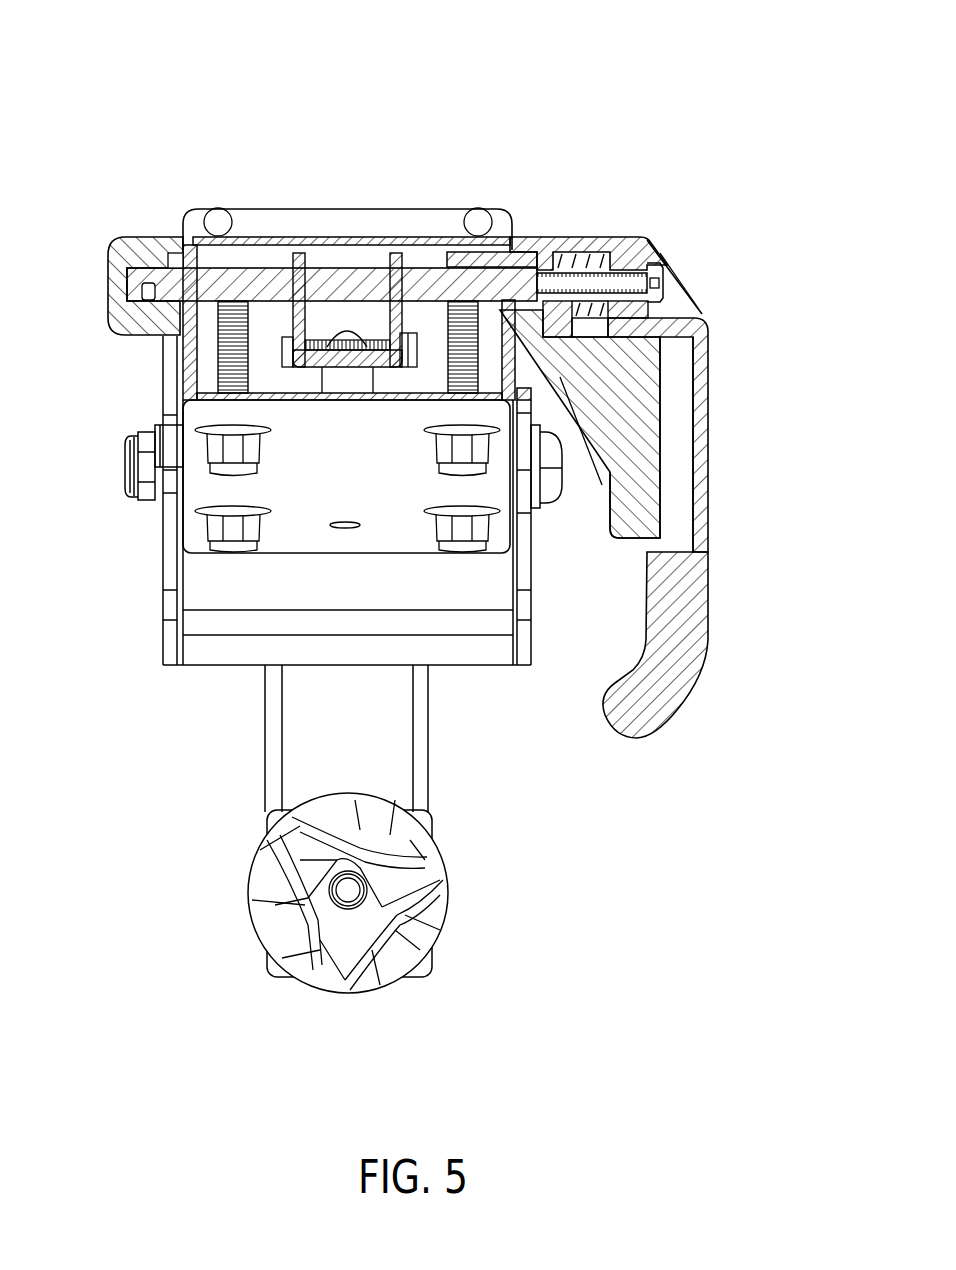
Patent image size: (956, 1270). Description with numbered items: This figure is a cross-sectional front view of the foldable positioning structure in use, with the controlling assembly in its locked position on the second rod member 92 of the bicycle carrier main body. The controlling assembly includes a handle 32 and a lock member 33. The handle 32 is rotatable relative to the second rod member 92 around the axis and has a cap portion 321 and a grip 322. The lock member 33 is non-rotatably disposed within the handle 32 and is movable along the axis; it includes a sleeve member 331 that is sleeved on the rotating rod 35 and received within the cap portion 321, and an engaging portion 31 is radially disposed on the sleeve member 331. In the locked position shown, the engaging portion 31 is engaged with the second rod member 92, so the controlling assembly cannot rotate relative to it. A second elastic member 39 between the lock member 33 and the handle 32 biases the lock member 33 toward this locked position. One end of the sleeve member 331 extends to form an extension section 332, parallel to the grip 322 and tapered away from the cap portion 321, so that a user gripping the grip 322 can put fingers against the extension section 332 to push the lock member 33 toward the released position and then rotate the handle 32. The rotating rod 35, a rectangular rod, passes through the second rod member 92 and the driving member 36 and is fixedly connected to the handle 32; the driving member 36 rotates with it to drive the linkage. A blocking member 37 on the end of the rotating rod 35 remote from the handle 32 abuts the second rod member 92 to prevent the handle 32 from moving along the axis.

The engaging portion 31 is at (492, 337).
The handle 32 is at (725, 423).
The cap portion 321 is at (623, 243).
The grip 322 is at (702, 343).
The lock member 33 is at (610, 470).
The sleeve member 331 is at (529, 254).
The extension section 332 is at (653, 490).
The rotating rod 35 is at (260, 268).
The driving member 36 is at (317, 337).
The blocking member 37 is at (140, 237).
The second elastic member 39 is at (593, 247).
The second rod member 92 is at (303, 220).